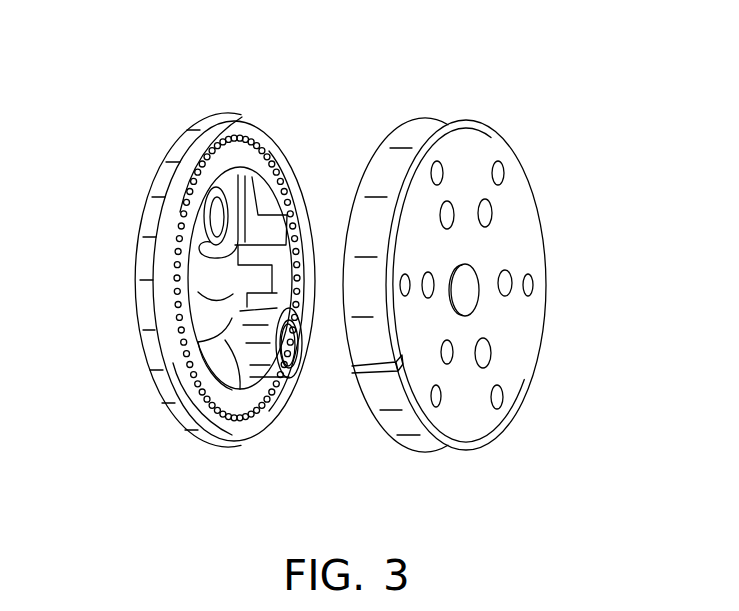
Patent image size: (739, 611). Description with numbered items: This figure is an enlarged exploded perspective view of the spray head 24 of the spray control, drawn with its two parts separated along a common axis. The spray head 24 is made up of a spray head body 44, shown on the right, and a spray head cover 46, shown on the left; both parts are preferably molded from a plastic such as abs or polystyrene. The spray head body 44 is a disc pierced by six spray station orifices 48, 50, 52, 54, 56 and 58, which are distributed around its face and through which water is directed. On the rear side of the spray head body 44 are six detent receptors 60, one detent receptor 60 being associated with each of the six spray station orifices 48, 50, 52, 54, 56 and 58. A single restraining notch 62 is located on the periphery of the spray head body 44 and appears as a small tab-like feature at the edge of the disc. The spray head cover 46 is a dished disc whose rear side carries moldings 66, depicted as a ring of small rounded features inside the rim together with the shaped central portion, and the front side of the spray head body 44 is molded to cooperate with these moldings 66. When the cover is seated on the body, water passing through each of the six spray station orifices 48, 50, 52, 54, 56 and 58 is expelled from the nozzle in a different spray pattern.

The spray head 24 is at (517, 118).
The spray head body 44 is at (516, 165).
The spray head cover 46 is at (220, 113).
The spray station orifice 48 is at (441, 207).
The spray station orifice 50 is at (492, 213).
The spray station orifice 52 is at (512, 280).
The spray station orifice 54 is at (491, 353).
The spray station orifice 56 is at (447, 364).
The spray station orifice 58 is at (430, 271).
The detent receptor 60 is at (437, 160).
The restraining notch 62 is at (381, 375).
The moldings 66 is at (281, 138).